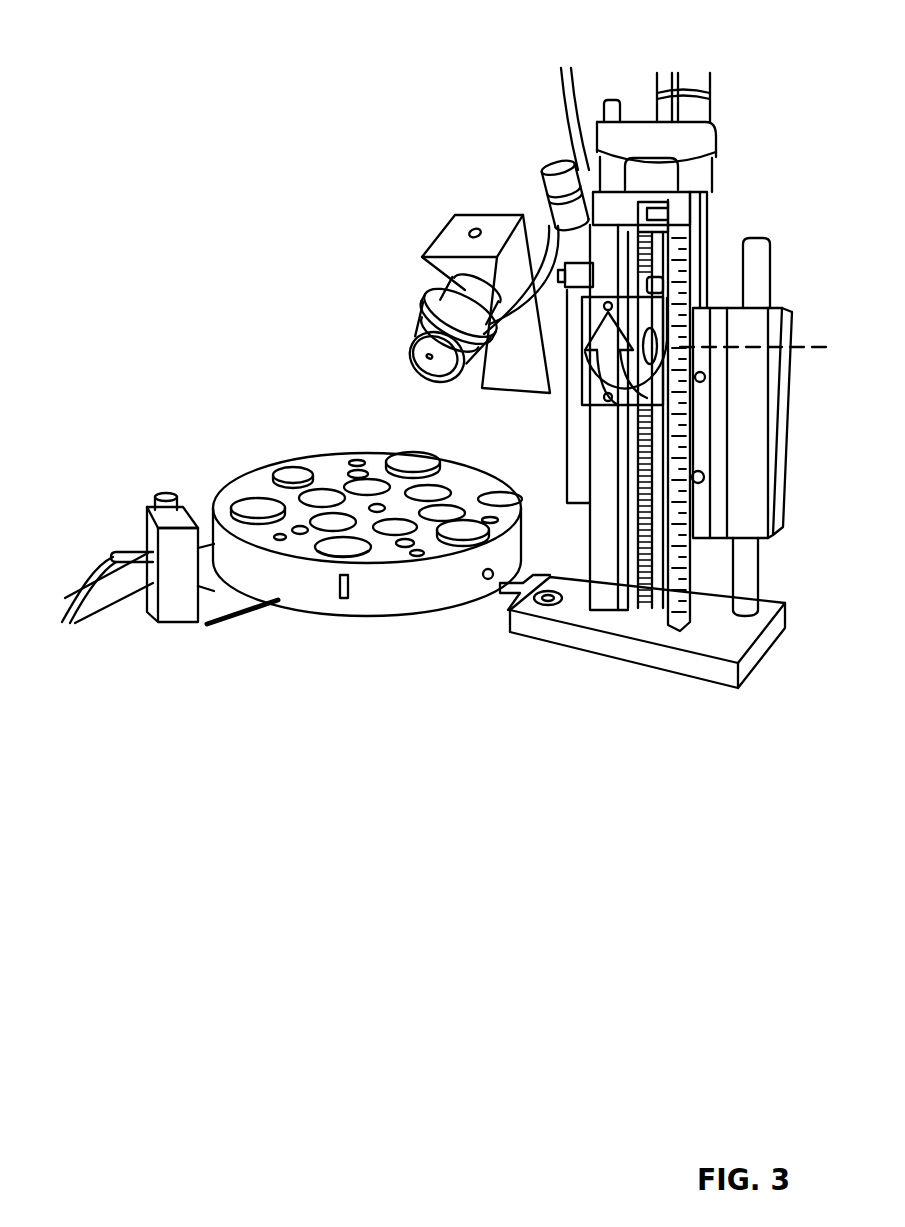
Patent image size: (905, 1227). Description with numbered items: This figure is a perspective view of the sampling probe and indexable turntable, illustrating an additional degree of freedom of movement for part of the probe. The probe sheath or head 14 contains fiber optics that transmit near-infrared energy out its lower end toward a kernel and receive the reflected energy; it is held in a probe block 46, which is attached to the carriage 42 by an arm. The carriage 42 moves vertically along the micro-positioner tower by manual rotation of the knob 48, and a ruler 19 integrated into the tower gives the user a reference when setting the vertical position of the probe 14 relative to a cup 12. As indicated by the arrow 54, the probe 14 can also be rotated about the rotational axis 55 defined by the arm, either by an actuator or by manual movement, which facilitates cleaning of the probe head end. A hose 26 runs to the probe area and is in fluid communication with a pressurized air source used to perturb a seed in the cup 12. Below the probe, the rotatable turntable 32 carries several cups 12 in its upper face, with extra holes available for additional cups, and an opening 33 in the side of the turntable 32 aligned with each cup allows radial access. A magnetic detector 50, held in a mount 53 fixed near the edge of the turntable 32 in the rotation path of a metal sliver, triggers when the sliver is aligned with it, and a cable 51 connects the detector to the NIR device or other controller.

The cup 12 is at (472, 518).
The probe sheath or head 14 is at (452, 251).
The ruler 19 is at (685, 505).
The tube or hose 26 is at (583, 100).
The rotatable turntable 32 is at (362, 598).
The opening 33 is at (490, 580).
The carriage 42 is at (647, 320).
The probe block 46 is at (497, 222).
The knob 48 is at (700, 137).
The magnetic detector 50 is at (135, 556).
The cable 51 is at (330, 598).
The mount 53 is at (177, 590).
The arrow 54 is at (668, 393).
The rotational axis 55 is at (816, 347).